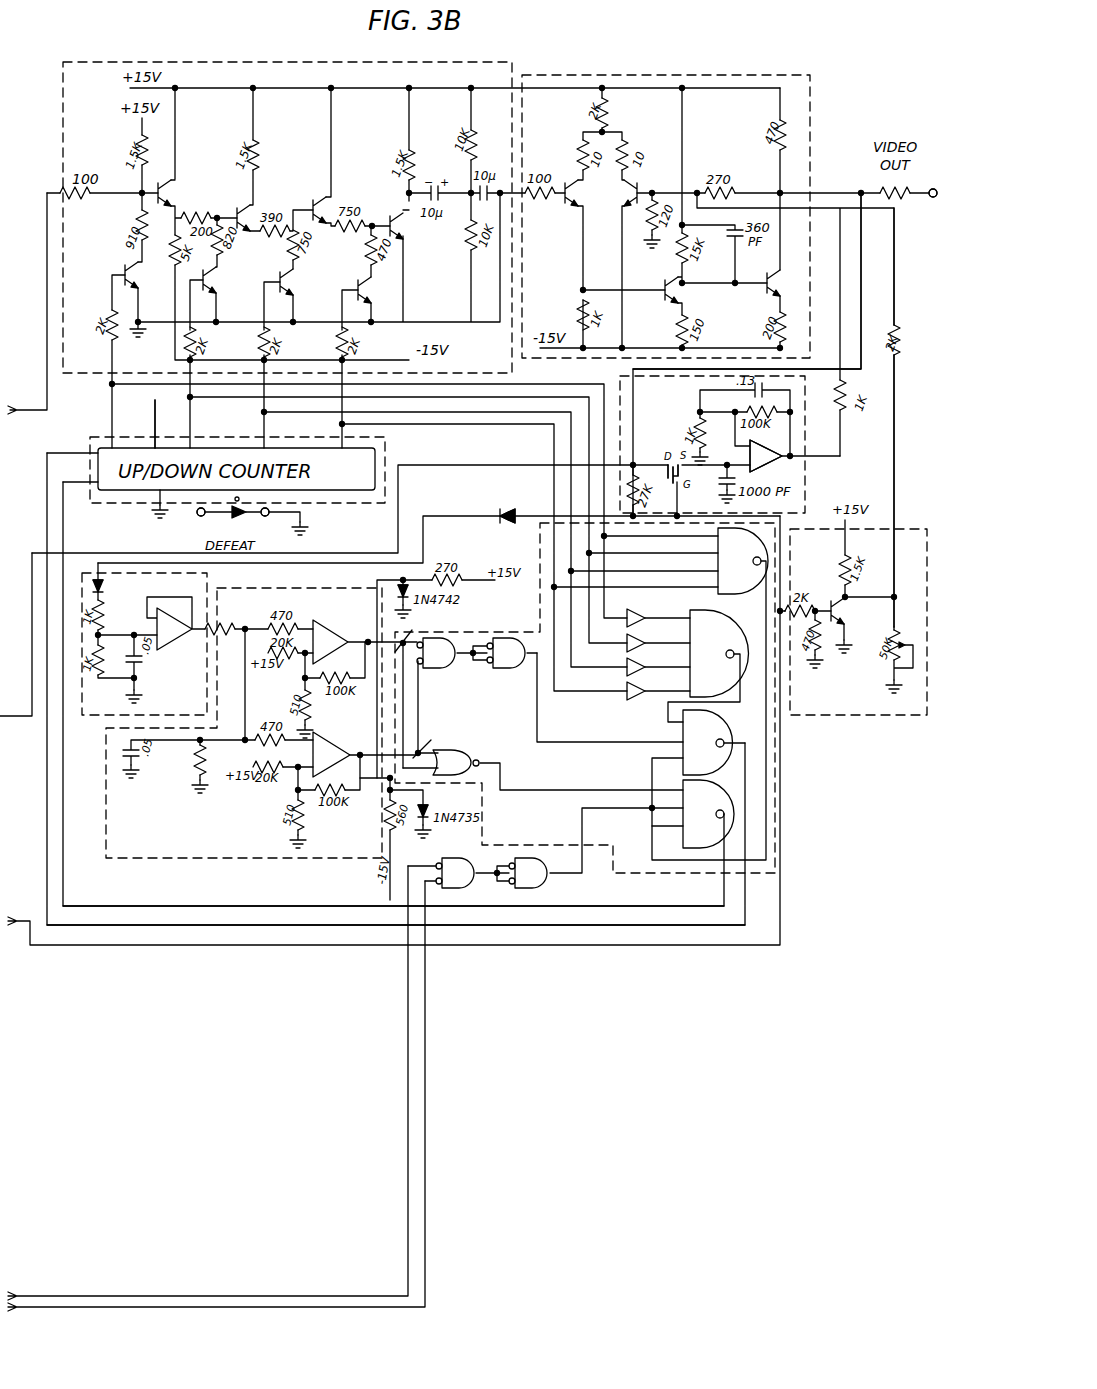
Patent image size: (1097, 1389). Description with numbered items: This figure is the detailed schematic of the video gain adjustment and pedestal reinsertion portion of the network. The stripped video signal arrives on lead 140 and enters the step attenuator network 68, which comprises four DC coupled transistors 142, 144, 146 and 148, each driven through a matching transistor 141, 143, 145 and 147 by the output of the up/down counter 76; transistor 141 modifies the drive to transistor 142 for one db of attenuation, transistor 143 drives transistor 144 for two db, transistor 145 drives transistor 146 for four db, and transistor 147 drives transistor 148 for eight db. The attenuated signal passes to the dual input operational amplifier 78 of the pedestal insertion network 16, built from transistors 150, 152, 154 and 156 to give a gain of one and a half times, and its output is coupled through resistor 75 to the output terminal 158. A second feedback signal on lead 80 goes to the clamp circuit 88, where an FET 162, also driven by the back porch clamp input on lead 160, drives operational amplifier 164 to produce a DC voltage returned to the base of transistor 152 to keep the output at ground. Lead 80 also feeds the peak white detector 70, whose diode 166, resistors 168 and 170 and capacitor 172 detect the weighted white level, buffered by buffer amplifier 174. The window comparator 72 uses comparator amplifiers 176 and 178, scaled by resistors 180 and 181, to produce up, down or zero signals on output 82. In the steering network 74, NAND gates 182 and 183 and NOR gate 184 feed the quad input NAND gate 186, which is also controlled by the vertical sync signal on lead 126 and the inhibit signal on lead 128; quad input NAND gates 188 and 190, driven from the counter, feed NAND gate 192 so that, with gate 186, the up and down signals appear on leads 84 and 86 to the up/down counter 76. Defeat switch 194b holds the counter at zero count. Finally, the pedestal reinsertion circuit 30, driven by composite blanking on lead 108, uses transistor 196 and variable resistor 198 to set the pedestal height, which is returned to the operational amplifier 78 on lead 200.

The step attenuator network 68 is at (315, 62).
The dual input operational amplifier 78 is at (695, 74).
The up/down counter 76 is at (90, 445).
The clamp circuit 88 is at (805, 488).
The steering network 74 is at (542, 630).
The peak white detector 70 is at (207, 583).
The window comparator 72 is at (240, 863).
The pedestal reinsertion circuit 30 is at (846, 723).
The transistor 142 is at (163, 186).
The transistor 146 is at (234, 214).
The transistor 144 is at (311, 200).
The transistor 148 is at (388, 216).
The matching transistor 141 is at (122, 273).
The matching transistor 143 is at (203, 277).
The matching transistor 145 is at (280, 279).
The matching transistor 147 is at (370, 288).
The lead 140 is at (47, 355).
The transistor 150 is at (572, 190).
The transistor 152 is at (640, 186).
The transistor 154 is at (770, 276).
The transistor 156 is at (672, 288).
The output resistor 75 is at (895, 186).
The output terminal 158 is at (930, 200).
The lead 80 is at (488, 468).
The lead 200 is at (897, 466).
The FET 162 is at (681, 479).
The operational amplifier 164 is at (768, 464).
The lead 160 is at (478, 518).
The lead 108 is at (32, 947).
The defeat switch 194b is at (258, 520).
The pedestal insertion network 16 is at (152, 432).
The quad input NAND gate 188 is at (710, 694).
The quad input NAND gate 190 is at (708, 666).
The quad input NAND gate 186 is at (641, 714).
The NAND gate 192 is at (607, 818).
The NAND gate 182 is at (427, 703).
The NAND gate 183 is at (512, 653).
The NOR gate 184 is at (441, 762).
The output 82 is at (423, 686).
The lead 128 is at (62, 1288).
The lead 126 is at (60, 1320).
The diode 166 is at (101, 589).
The resistor 168 is at (112, 615).
The resistor 170 is at (111, 660).
The capacitor 172 is at (140, 666).
The buffer amplifier 174 is at (176, 623).
The resistor 180 is at (225, 625).
The comparator amplifier 176 is at (340, 642).
The comparator amplifier 178 is at (365, 754).
The resistor 181 is at (201, 762).
The lead 84 is at (262, 903).
The lead 86 is at (583, 926).
The transistor 196 is at (830, 603).
The variable resistor 198 is at (899, 638).